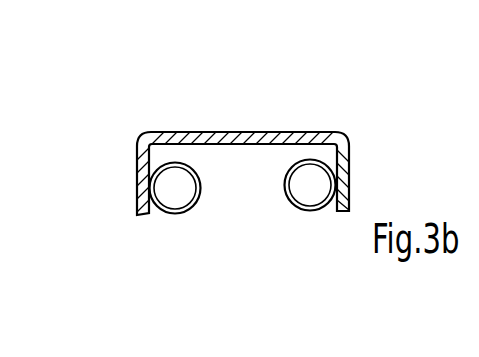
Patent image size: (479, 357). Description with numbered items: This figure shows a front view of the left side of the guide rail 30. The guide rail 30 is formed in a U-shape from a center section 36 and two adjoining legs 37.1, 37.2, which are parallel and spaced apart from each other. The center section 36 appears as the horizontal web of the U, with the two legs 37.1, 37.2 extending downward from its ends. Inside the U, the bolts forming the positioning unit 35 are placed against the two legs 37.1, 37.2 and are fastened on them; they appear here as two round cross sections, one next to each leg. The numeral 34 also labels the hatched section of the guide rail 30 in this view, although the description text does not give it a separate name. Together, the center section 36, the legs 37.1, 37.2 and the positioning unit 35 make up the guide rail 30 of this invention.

The guide rail 30 is at (236, 93).
The channel-shaped guide profile 34 is at (247, 134).
The positioning unit 35 is at (298, 192).
The center section 36 is at (205, 133).
The leg 37.1 is at (137, 157).
The leg 37.2 is at (349, 154).